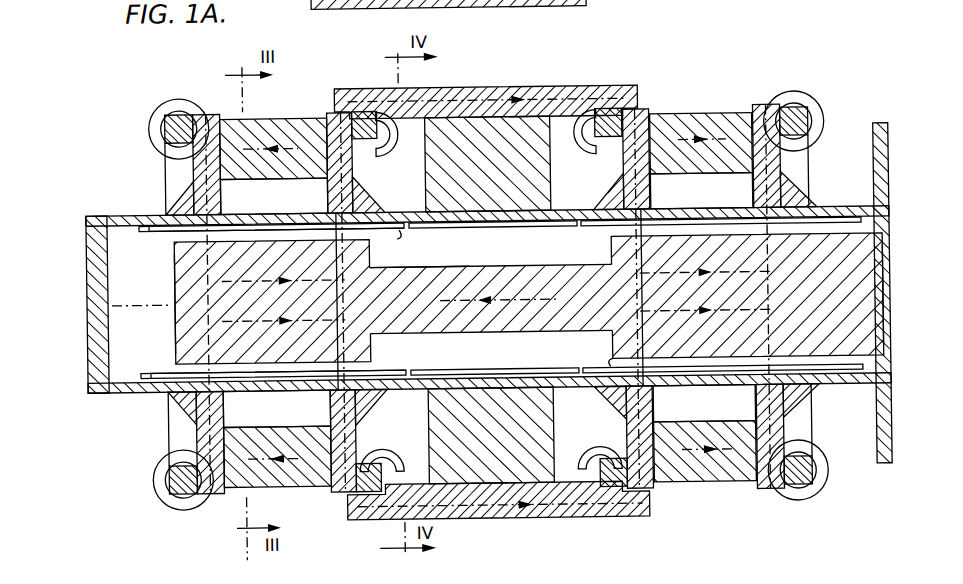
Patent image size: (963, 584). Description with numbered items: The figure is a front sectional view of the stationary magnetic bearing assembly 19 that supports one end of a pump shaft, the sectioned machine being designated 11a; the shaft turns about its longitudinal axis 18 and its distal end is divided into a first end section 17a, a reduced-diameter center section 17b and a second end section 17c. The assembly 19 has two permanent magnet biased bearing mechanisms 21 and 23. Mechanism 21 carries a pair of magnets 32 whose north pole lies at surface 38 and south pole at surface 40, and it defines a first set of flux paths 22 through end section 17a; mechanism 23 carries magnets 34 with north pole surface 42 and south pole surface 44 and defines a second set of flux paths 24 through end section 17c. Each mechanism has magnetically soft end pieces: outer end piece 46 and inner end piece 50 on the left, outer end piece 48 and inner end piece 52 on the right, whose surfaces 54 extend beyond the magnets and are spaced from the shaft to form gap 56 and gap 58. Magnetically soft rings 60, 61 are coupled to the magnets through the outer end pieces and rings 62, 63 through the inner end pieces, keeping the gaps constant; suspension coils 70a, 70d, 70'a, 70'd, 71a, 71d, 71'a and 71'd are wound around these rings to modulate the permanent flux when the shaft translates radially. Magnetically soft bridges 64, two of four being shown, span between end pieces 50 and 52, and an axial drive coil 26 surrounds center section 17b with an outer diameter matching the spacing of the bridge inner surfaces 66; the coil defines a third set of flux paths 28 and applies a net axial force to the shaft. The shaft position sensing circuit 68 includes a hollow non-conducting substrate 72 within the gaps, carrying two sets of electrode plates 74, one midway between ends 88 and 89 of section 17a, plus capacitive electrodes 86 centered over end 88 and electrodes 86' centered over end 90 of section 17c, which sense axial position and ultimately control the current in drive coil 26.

The electromagnetic machine 11a is at (148, 280).
The first end section 17a is at (272, 302).
The center section 17b is at (491, 298).
The second end section 17c is at (747, 296).
The axis of rotation 18 is at (150, 305).
The magnetic bearing assembly 19 is at (582, 78).
The permanent magnet biased bearing mechanism 21 is at (290, 110).
The first set of magnetic flux paths 22 is at (228, 192).
The permanent magnet biased bearing mechanism 23 is at (736, 105).
The second set of magnetic flux paths 24 is at (720, 140).
The axial drive coil 26 is at (490, 300).
The third set of magnetic flux paths 28 is at (468, 266).
The magnets 32 is at (258, 116).
The magnets 34 is at (673, 116).
The north pole surface 38 is at (196, 180).
The south pole surface 40 is at (335, 111).
The north pole surface 42 is at (770, 108).
The south pole surface 44 is at (658, 484).
The outer end piece 46 is at (208, 111).
The outer end piece 48 is at (740, 192).
The inner end piece 50 is at (362, 180).
The inner end piece 52 is at (640, 111).
The surfaces of end pieces 54 is at (178, 202).
The gap 56 is at (172, 240).
The gap 58 is at (815, 352).
The magnetically soft ring 60 is at (172, 130).
The magnetically soft ring 61 is at (808, 112).
The magnetically soft ring 62 is at (370, 110).
The magnetically soft ring 63 is at (612, 110).
The magnetically soft bridge 64 is at (523, 87).
The inner surface of bridge 66 is at (430, 117).
The shaft position sensing servo-control circuit 68 is at (832, 200).
The suspension coil 70a is at (155, 110).
The suspension coil 70d is at (185, 506).
The suspension coil 70'a is at (820, 118).
The suspension coil 70'd is at (827, 472).
The suspension coil 71a is at (392, 148).
The suspension coil 71d is at (392, 452).
The suspension coil 71'a is at (578, 141).
The suspension coil 71'd is at (589, 441).
The hollow cylindrical substrate 72 is at (148, 226).
The electrode plates 74 is at (292, 222).
The capacitive electrodes 86 is at (364, 300).
The capacitive electrodes 86' is at (702, 295).
The end of end section 17a 88 is at (378, 250).
The end of end section 17a 89 is at (175, 330).
The end of end section 17c 90 is at (612, 366).